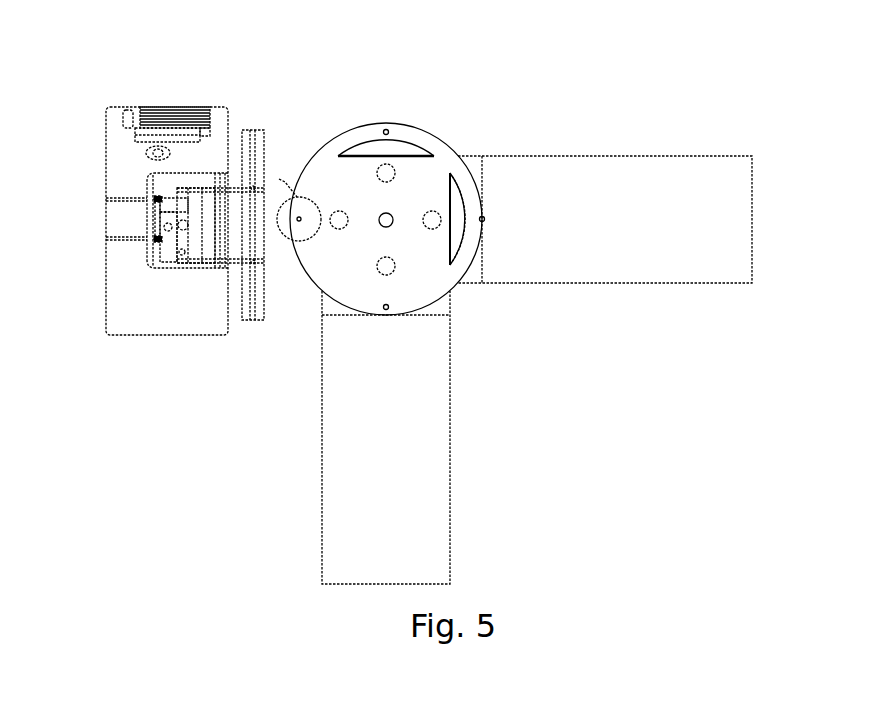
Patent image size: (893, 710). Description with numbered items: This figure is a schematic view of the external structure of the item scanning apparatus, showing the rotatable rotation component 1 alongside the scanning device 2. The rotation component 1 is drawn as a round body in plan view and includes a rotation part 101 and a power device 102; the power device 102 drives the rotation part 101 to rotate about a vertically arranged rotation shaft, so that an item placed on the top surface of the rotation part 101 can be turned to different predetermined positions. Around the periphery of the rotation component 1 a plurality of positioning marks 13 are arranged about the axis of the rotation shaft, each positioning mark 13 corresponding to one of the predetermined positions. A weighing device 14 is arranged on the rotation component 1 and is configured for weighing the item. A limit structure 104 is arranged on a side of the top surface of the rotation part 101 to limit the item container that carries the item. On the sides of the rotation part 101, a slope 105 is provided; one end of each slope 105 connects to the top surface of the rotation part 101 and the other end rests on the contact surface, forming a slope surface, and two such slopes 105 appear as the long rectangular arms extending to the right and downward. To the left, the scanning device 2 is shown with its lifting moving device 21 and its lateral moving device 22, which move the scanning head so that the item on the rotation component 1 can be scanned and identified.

The rotation component 1 is at (463, 291).
The scanning device 2 is at (243, 334).
The positioning marks 13 is at (480, 218).
The weighing device 14 is at (374, 168).
The lifting moving device 21 is at (142, 190).
The lateral moving device 22 is at (258, 146).
The rotation part 101 is at (438, 176).
The power device 102 is at (399, 150).
The limit structure 104 is at (460, 238).
The slope 105 is at (742, 194).